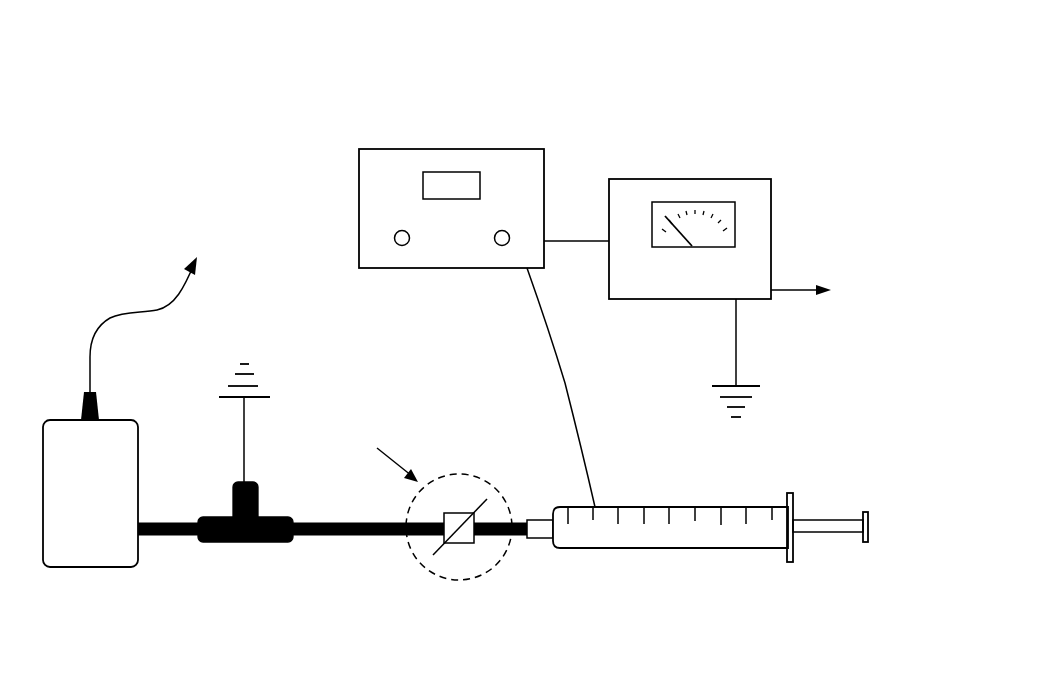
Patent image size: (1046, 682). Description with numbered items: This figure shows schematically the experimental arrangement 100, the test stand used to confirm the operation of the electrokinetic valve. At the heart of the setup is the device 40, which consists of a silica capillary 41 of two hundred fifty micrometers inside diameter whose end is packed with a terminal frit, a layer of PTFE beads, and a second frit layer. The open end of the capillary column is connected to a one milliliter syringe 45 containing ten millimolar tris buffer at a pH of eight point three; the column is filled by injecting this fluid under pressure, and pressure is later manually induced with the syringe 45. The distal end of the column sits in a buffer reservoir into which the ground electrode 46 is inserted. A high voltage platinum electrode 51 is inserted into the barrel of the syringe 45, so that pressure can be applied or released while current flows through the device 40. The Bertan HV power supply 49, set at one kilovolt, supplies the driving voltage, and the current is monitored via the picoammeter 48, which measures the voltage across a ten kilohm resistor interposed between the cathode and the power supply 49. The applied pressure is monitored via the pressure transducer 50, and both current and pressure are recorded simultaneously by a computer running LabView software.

The experimental arrangement 100 is at (322, 62).
The HV power supply 49 is at (333, 149).
The picoammeter 48 is at (653, 179).
The ground electrode 46 is at (262, 395).
The high voltage platinum electrode 51 is at (563, 382).
The silica capillary 41 is at (343, 535).
The device 40 is at (475, 540).
The syringe 45 is at (670, 548).
The pressure transducer 50 is at (110, 567).